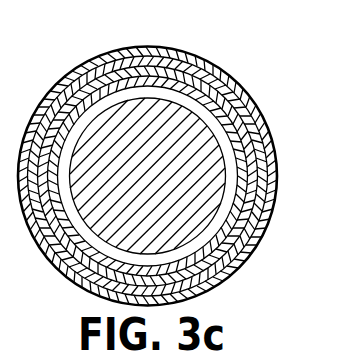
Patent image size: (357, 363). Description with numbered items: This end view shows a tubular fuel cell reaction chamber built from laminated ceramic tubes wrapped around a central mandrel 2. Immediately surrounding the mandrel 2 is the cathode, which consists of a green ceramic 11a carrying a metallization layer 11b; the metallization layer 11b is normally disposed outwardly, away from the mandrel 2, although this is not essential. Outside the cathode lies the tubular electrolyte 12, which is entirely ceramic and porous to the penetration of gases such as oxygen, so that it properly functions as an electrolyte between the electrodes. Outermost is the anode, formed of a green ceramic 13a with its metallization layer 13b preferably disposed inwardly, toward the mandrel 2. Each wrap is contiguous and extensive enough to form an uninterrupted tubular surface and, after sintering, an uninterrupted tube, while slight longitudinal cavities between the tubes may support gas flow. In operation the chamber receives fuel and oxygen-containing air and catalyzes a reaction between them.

The green ceramic of the tubular anode 13a is at (175, 48).
The metallization layer of the tubular anode 13b is at (190, 62).
The electrolyte 12 is at (249, 112).
The metallization layer of the tubular cathode 11b is at (248, 163).
The green ceramic of the tubular cathode 11a is at (232, 202).
The mandrel 2 is at (187, 208).